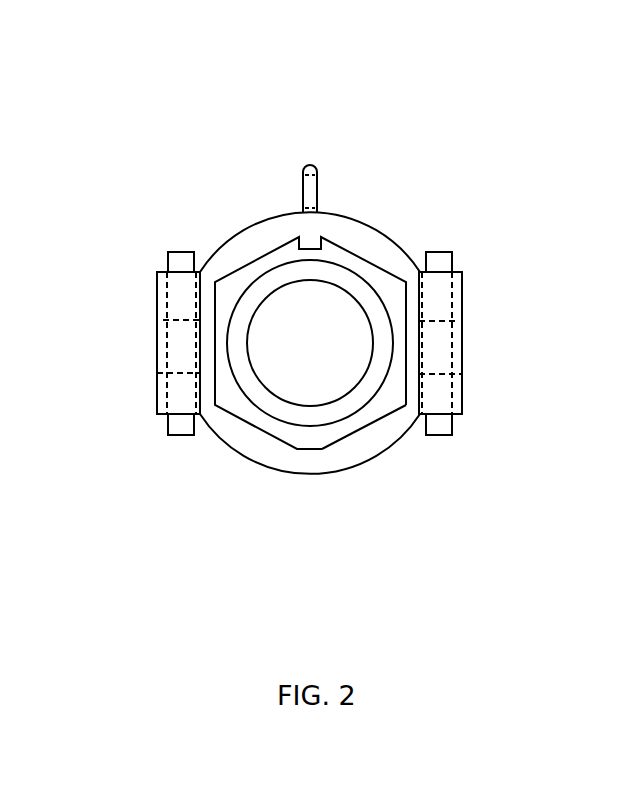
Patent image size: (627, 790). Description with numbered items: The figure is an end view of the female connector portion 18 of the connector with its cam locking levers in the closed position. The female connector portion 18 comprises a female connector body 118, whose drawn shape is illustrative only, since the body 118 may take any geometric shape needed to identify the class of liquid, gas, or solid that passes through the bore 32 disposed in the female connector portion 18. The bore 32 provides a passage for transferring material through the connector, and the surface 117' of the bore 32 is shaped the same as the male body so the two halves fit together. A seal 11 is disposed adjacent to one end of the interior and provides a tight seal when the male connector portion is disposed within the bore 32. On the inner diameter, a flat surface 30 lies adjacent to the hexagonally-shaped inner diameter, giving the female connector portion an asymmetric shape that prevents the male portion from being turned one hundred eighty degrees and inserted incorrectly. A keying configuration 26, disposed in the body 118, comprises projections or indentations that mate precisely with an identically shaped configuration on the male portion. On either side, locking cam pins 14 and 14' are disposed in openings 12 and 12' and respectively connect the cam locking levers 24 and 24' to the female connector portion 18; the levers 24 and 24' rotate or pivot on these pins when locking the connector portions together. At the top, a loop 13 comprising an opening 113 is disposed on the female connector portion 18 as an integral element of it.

The female connector portion 18 is at (217, 193).
The loop 13 is at (310, 165).
The opening 113 is at (309, 188).
The configuration 26 is at (309, 240).
The seal 11 is at (358, 288).
The locking cam pin 14 is at (118, 342).
The locking cam pin 14' is at (506, 344).
The opening 12 is at (115, 343).
The opening 12' is at (506, 343).
The cam locking lever 24 is at (117, 380).
The cam locking lever 24' is at (502, 381).
The bore 32 is at (297, 373).
The surface 30 is at (312, 448).
The surface of bore 117' is at (403, 468).
The female connector body 118 is at (285, 473).